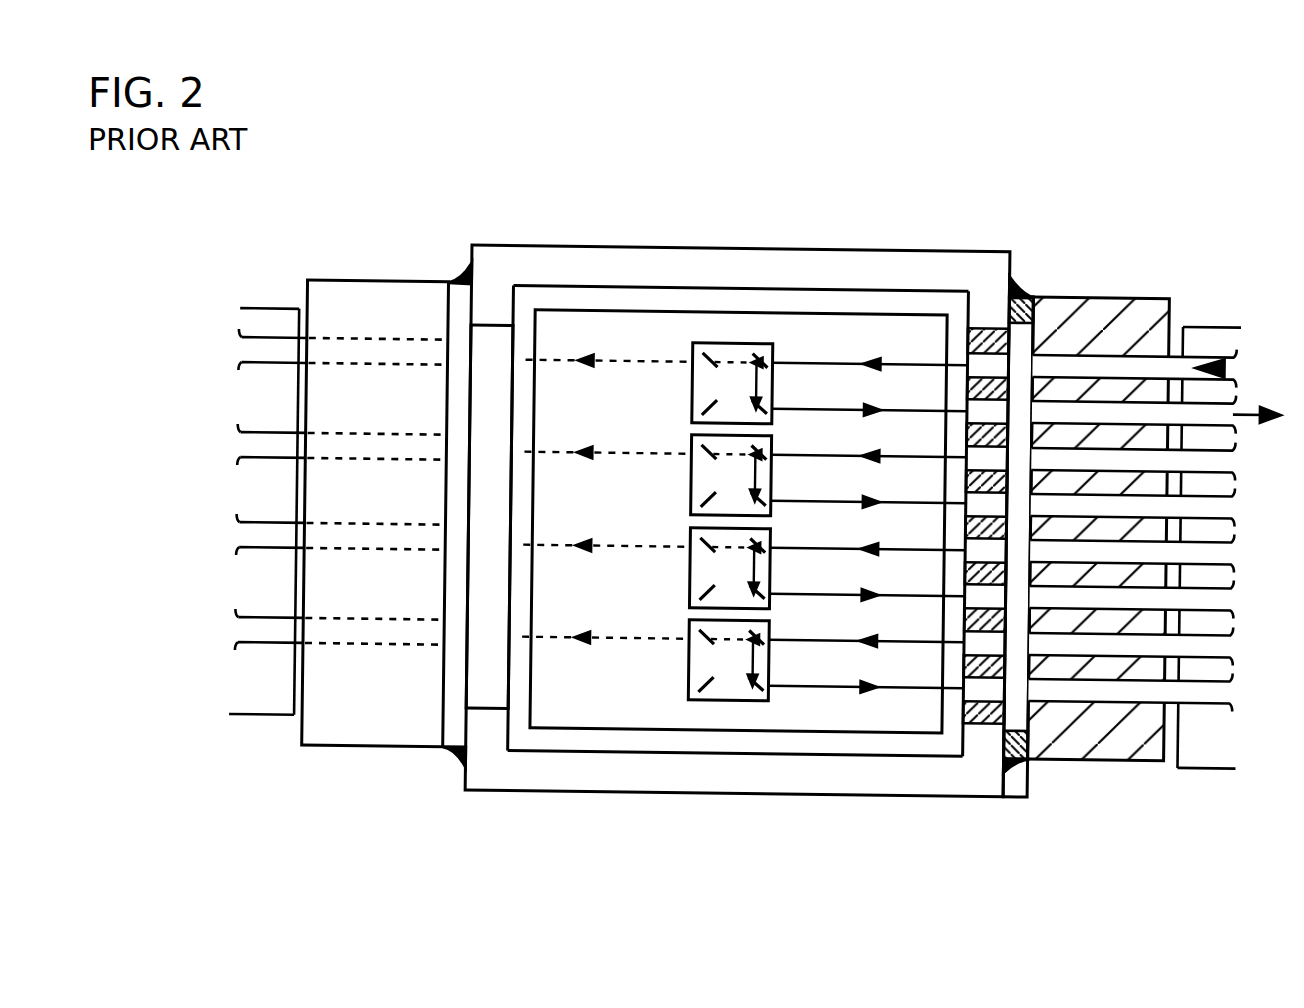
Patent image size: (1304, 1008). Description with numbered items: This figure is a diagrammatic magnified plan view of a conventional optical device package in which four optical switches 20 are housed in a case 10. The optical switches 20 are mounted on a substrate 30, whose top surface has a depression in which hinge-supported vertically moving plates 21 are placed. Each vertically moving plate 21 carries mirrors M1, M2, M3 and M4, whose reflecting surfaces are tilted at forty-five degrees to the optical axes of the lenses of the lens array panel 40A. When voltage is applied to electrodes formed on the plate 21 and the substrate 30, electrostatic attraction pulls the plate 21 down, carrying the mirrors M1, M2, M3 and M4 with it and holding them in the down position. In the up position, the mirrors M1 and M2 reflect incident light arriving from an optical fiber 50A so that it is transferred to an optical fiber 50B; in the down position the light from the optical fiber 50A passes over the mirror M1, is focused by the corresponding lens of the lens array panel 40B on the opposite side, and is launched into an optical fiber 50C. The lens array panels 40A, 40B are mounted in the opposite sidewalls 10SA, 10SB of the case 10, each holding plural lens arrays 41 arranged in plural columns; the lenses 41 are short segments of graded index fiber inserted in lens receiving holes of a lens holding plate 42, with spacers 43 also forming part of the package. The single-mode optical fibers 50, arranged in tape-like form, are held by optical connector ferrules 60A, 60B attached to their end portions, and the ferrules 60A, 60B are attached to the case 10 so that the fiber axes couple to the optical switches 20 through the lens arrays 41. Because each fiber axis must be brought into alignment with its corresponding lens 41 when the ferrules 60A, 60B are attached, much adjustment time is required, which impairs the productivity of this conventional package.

The case 10 is at (510, 242).
The sidewall 10SA is at (963, 738).
The sidewall 10SB is at (508, 731).
The optical switch 20 is at (945, 185).
The vertically moving plate 21 is at (728, 350).
The mirror M1 is at (758, 350).
The mirror M2 is at (759, 398).
The mirror M3 is at (706, 350).
The mirror M4 is at (705, 400).
The substrate 30 is at (600, 730).
The lens array panel 40A is at (985, 610).
The lens array panel 40B is at (481, 691).
The lens array 41 is at (990, 688).
The lens holding plate 42 is at (967, 700).
The spacer 43 is at (1046, 577).
The single-mode optical fiber 50 is at (1160, 497).
The optical fiber 50A is at (1292, 281).
The optical fiber 50B is at (1236, 396).
The optical fiber 50C is at (262, 350).
The optical connector ferrule 60A is at (1096, 297).
The optical connector ferrule 60B is at (369, 281).